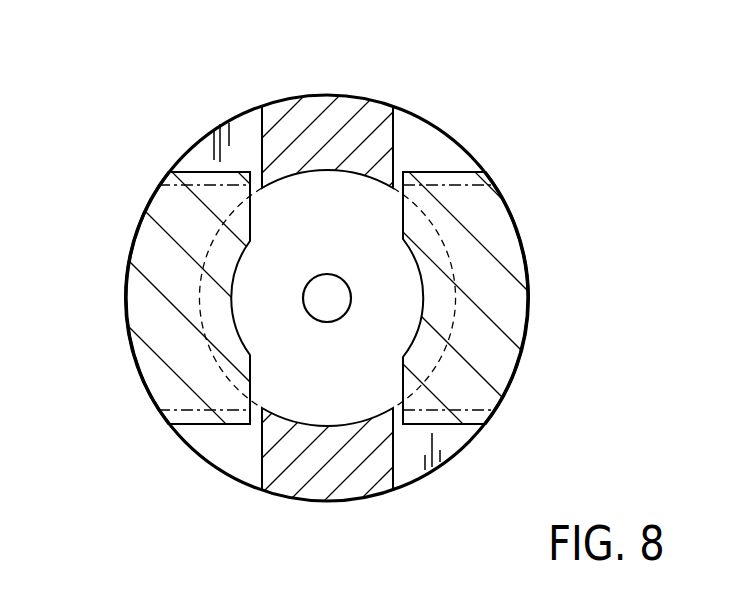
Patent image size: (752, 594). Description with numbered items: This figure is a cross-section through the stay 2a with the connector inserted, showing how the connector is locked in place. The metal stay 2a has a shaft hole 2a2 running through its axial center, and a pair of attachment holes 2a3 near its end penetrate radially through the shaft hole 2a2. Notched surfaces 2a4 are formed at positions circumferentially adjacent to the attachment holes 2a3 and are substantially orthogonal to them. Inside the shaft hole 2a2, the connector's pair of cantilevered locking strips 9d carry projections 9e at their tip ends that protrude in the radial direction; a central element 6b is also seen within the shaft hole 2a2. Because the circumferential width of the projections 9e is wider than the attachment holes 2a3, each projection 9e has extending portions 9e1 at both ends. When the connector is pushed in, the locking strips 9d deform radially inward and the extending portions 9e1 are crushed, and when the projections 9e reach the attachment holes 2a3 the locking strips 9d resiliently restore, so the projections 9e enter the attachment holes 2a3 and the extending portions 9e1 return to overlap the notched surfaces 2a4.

The stay 2a is at (403, 88).
The shaft hole 2a2 is at (397, 295).
The attachment holes 2a3 is at (250, 212).
The notched surfaces 2a4 is at (262, 134).
The shaft 6b is at (325, 297).
The locking strips 9d is at (170, 392).
The projections 9e is at (155, 363).
The extending portions 9e1 is at (212, 185).